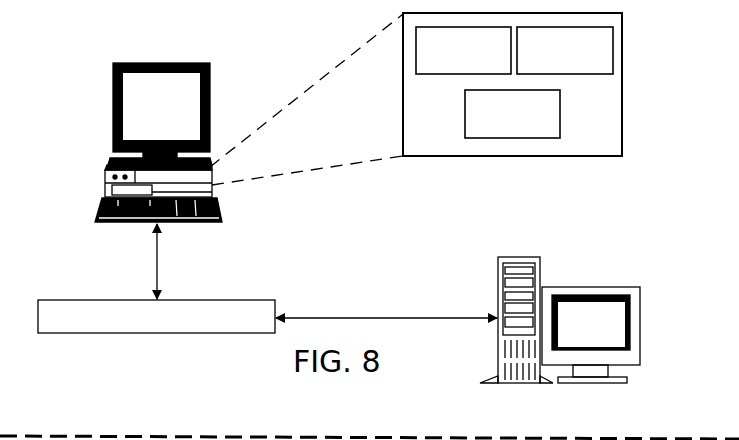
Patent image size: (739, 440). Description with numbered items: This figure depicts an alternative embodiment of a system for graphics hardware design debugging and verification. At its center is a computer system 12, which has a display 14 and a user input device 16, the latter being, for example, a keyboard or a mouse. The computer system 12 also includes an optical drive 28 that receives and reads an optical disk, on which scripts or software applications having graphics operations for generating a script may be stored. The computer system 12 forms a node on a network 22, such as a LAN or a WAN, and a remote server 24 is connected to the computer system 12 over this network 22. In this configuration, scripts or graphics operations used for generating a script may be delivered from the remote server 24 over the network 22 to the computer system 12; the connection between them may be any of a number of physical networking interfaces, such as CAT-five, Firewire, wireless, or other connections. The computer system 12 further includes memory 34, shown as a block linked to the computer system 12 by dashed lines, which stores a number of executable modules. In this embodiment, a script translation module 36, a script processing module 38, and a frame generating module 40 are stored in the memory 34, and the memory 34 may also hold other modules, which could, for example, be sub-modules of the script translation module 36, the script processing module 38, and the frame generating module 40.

The computer system 12 is at (166, 170).
The display 14 is at (210, 65).
The user input device 16 is at (180, 227).
The optical drive 28 is at (110, 190).
The network 22 is at (45, 300).
The remote server 24 is at (533, 257).
The memory 34 is at (512, 97).
The script translation module 36 is at (452, 61).
The script processing module 38 is at (553, 61).
The frame generating module 40 is at (502, 123).